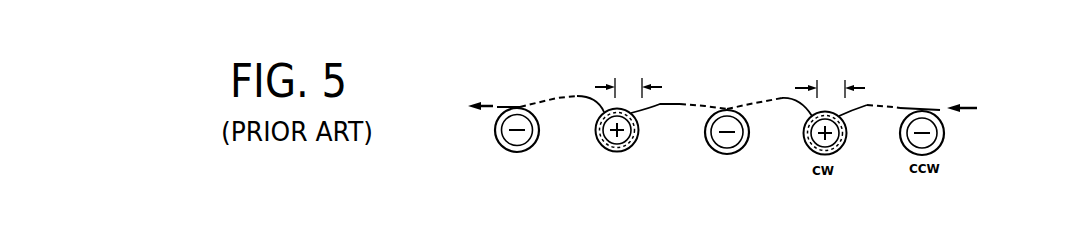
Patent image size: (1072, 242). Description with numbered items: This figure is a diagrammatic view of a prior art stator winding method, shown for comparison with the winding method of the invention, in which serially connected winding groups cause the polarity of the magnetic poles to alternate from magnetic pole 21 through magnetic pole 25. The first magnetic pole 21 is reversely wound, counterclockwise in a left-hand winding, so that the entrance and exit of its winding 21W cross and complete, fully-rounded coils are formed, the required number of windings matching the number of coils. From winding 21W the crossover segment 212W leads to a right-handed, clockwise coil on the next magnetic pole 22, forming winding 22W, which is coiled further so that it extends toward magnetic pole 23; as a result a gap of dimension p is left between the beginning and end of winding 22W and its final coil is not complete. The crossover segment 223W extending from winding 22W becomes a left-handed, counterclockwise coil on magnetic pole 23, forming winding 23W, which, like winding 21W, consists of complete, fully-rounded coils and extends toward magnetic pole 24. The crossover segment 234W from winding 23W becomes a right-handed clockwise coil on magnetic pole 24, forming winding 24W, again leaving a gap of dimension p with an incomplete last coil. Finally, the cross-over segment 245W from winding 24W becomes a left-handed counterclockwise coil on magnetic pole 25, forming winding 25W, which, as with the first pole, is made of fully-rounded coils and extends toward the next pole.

The first magnetic pole 21 is at (930, 133).
The second magnetic pole 22 is at (840, 133).
The third magnetic pole 23 is at (737, 132).
The fourth magnetic pole 24 is at (630, 127).
The fifth magnetic pole 25 is at (527, 132).
The winding of the first magnetic pole 21W is at (938, 145).
The winding of the second magnetic pole 22W is at (843, 145).
The winding of the third magnetic pole 23W is at (740, 145).
The winding of the fourth magnetic pole 24W is at (637, 138).
The winding of the fifth magnetic pole 25W is at (535, 143).
The crossover segment 212W is at (893, 105).
The crossover segment 223W is at (762, 100).
The crossover segment 234W is at (685, 102).
The cross-over segment 245W is at (557, 98).
The gap dimension p is at (730, 88).